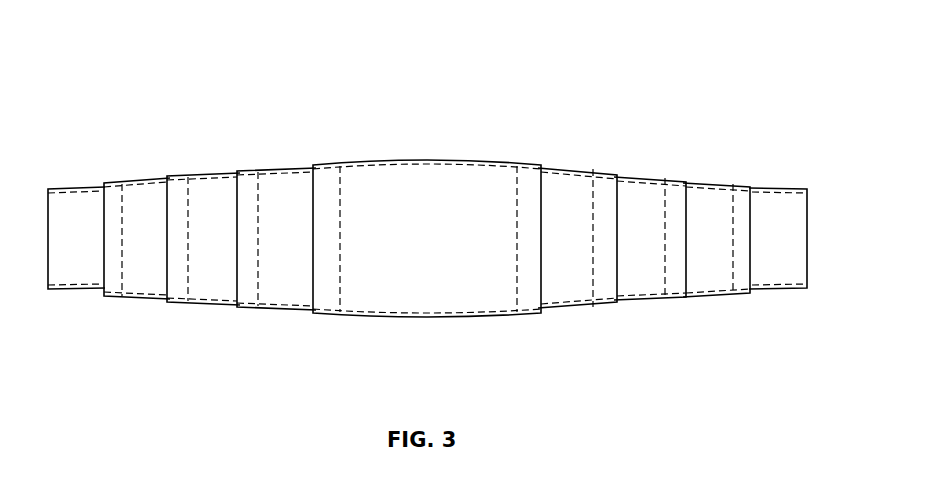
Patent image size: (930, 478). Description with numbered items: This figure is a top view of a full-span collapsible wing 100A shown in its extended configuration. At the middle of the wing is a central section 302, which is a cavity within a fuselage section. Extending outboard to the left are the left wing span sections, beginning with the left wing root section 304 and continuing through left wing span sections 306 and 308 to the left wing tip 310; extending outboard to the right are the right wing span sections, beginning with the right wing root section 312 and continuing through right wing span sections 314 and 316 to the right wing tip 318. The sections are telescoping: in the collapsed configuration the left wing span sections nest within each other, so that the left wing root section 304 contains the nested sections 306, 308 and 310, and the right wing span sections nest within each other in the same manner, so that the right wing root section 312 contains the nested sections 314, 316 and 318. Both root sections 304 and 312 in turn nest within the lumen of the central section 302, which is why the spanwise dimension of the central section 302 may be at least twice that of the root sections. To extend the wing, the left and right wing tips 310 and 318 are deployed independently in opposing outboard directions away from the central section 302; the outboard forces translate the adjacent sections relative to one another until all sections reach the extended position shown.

The full-span collapsible wing 100A is at (427, 192).
The central section 302 is at (427, 214).
The left wing root section 304 is at (308, 267).
The left wing span section 306 is at (243, 211).
The left wing span section 308 is at (173, 272).
The left wing tip 310 is at (114, 203).
The right wing root section 312 is at (600, 265).
The right wing span section 314 is at (610, 210).
The right wing span section 316 is at (744, 267).
The right wing tip 318 is at (734, 205).